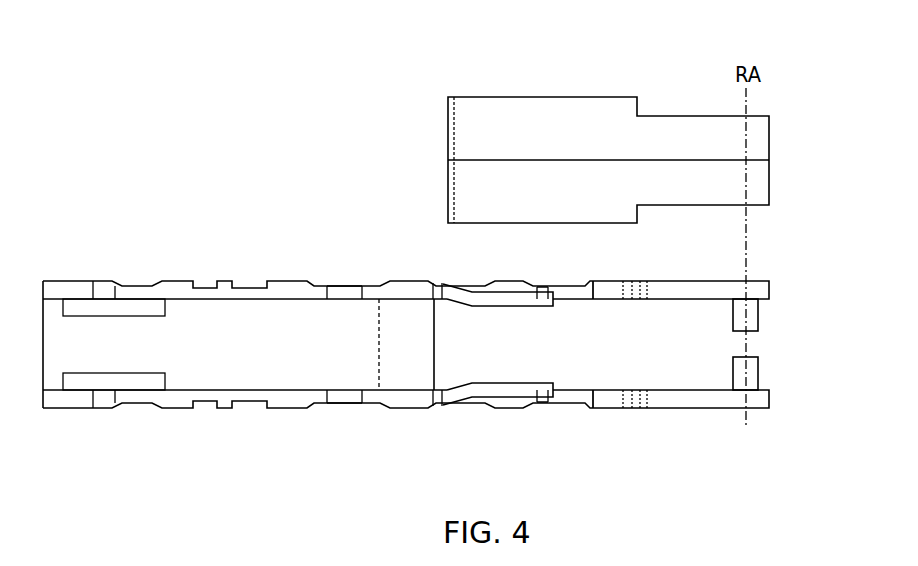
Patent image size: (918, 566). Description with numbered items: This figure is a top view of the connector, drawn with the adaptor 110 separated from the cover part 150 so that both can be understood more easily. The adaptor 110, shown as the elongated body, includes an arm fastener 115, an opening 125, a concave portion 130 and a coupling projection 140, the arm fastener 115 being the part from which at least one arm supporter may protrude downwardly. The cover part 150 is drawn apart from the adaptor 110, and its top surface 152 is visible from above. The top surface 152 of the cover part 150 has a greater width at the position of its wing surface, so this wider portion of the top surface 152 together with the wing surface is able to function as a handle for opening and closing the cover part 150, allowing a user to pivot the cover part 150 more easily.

The adaptor 110 is at (178, 279).
The arm fastener 115 is at (215, 362).
The opening 125 is at (667, 360).
The concave portion 130 is at (533, 309).
The coupling projection 140 is at (758, 372).
The cover part 150 is at (566, 93).
The top surface 152 is at (465, 132).